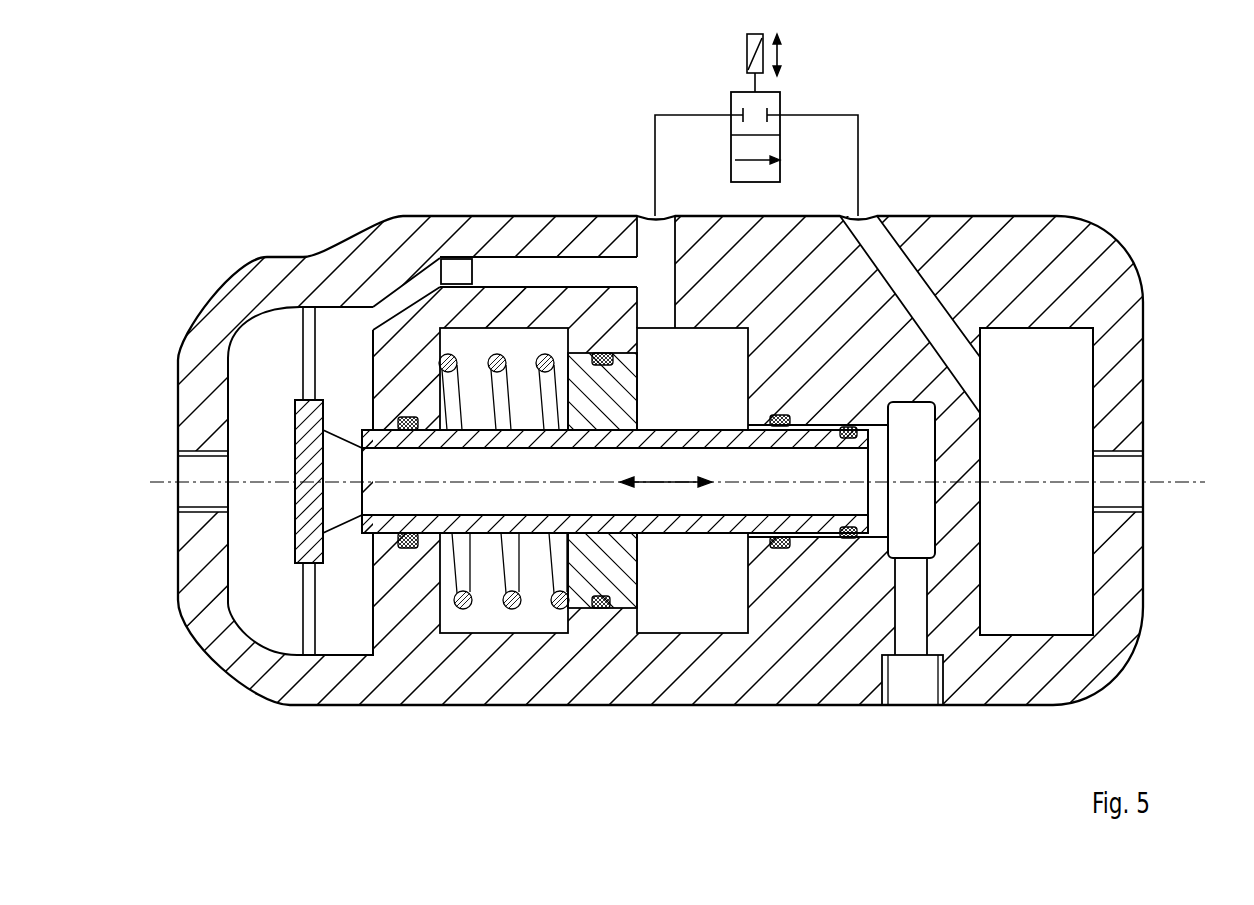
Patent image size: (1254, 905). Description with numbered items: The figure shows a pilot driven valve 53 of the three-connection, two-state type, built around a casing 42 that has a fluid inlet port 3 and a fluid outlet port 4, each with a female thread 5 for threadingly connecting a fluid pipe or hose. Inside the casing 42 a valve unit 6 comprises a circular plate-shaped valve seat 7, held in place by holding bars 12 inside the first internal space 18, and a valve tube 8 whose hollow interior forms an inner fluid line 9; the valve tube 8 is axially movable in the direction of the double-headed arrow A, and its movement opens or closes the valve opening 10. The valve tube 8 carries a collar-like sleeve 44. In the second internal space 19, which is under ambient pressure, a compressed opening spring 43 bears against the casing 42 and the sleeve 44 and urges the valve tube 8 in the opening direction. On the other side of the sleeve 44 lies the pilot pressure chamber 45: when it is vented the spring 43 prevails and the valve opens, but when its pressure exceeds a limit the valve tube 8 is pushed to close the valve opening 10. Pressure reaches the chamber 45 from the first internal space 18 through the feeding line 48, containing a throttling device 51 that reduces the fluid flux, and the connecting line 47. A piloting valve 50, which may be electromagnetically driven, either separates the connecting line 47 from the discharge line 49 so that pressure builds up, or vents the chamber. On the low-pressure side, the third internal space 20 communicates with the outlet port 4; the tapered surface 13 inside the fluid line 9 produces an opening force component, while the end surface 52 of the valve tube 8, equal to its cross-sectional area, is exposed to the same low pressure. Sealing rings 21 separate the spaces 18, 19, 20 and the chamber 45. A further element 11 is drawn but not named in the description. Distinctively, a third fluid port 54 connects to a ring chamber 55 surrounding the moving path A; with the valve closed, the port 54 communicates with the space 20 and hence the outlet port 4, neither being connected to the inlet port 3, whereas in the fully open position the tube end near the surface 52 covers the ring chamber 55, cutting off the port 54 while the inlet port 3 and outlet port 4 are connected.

The fluid inlet port 3 is at (186, 473).
The fluid outlet port 4 is at (1133, 472).
The female thread 5 is at (208, 507).
The valve unit 6 is at (248, 400).
The valve seat 7 is at (283, 428).
The valve tube 8 is at (718, 540).
The inner fluid line 9 is at (810, 477).
The valve opening 10 is at (337, 403).
The transition 11 is at (348, 515).
The holding bars 12 is at (307, 347).
The tapered surface 13 is at (365, 545).
The first internal space 18 is at (252, 600).
The second internal space 19 is at (538, 613).
The third internal space 20 is at (1020, 545).
The sealing rings 21 is at (405, 550).
The casing 42 is at (1038, 210).
The opening spring 43 is at (468, 610).
The collar-like sleeve 44 is at (628, 578).
The pilot pressure chamber 45 is at (675, 397).
The connecting line 47 is at (648, 238).
The feeding line 48 is at (411, 298).
The discharge line 49 is at (900, 265).
The piloting valve 50 is at (782, 100).
The throttling device 51 is at (453, 268).
The end surface 52 is at (870, 523).
The pilot driven valve 53 is at (1125, 210).
The third fluid port 54 is at (912, 680).
The ring chamber 55 is at (899, 535).
The double-headed arrow A is at (672, 487).